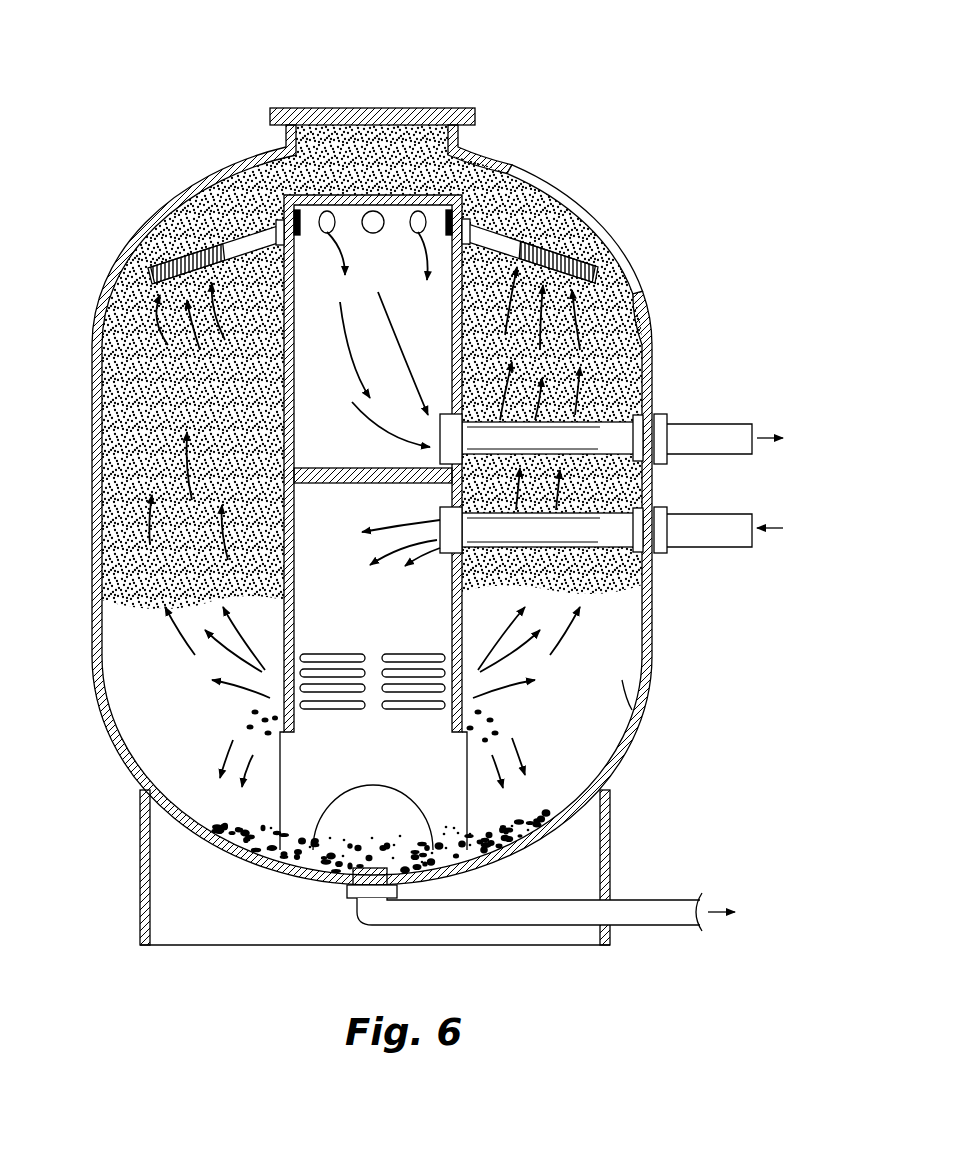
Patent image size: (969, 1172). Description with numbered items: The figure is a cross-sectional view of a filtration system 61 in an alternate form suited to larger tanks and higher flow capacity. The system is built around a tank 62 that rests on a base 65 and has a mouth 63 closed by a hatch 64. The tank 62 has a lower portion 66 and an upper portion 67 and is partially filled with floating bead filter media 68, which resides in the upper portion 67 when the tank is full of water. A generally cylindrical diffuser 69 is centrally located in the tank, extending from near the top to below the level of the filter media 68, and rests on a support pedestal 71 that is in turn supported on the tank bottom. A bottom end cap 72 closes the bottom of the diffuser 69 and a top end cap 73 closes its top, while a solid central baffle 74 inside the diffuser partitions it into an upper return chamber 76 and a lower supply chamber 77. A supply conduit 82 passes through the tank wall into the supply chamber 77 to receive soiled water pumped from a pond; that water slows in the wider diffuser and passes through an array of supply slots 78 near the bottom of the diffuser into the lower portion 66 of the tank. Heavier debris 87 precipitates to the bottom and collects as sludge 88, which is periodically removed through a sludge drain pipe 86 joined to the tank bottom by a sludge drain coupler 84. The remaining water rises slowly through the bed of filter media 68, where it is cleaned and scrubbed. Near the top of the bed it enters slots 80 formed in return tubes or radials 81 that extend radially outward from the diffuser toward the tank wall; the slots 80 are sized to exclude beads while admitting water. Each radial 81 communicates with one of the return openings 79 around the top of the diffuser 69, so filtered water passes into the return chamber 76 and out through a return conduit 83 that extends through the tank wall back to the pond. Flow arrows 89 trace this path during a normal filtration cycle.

The filtration system 61 is at (133, 77).
The tank 62 is at (655, 397).
The mouth 63 is at (460, 135).
The hatch 64 is at (405, 108).
The base 65 is at (217, 923).
The lower portion 66 is at (642, 697).
The upper portion 67 is at (568, 200).
The floating bead filter media 68 is at (658, 337).
The diffuser 69 is at (275, 405).
The support pedestal 71 is at (297, 797).
The bottom end cap 72 is at (410, 733).
The top end cap 73 is at (335, 190).
The central baffle 74 is at (335, 470).
The return chamber 76 is at (232, 180).
The supply chamber 77 is at (435, 623).
The supply slots 78 is at (392, 688).
The return openings 79 is at (415, 235).
The slots 80 is at (185, 256).
The return tube or radial 81 is at (272, 222).
The supply conduit 82 is at (615, 535).
The return conduit 83 is at (600, 430).
The sludge drain coupler 84 is at (348, 896).
The sludge drain pipe 86 is at (490, 913).
The debris 87 is at (210, 752).
The sludge 88 is at (543, 843).
The flow arrows 89 is at (150, 553).